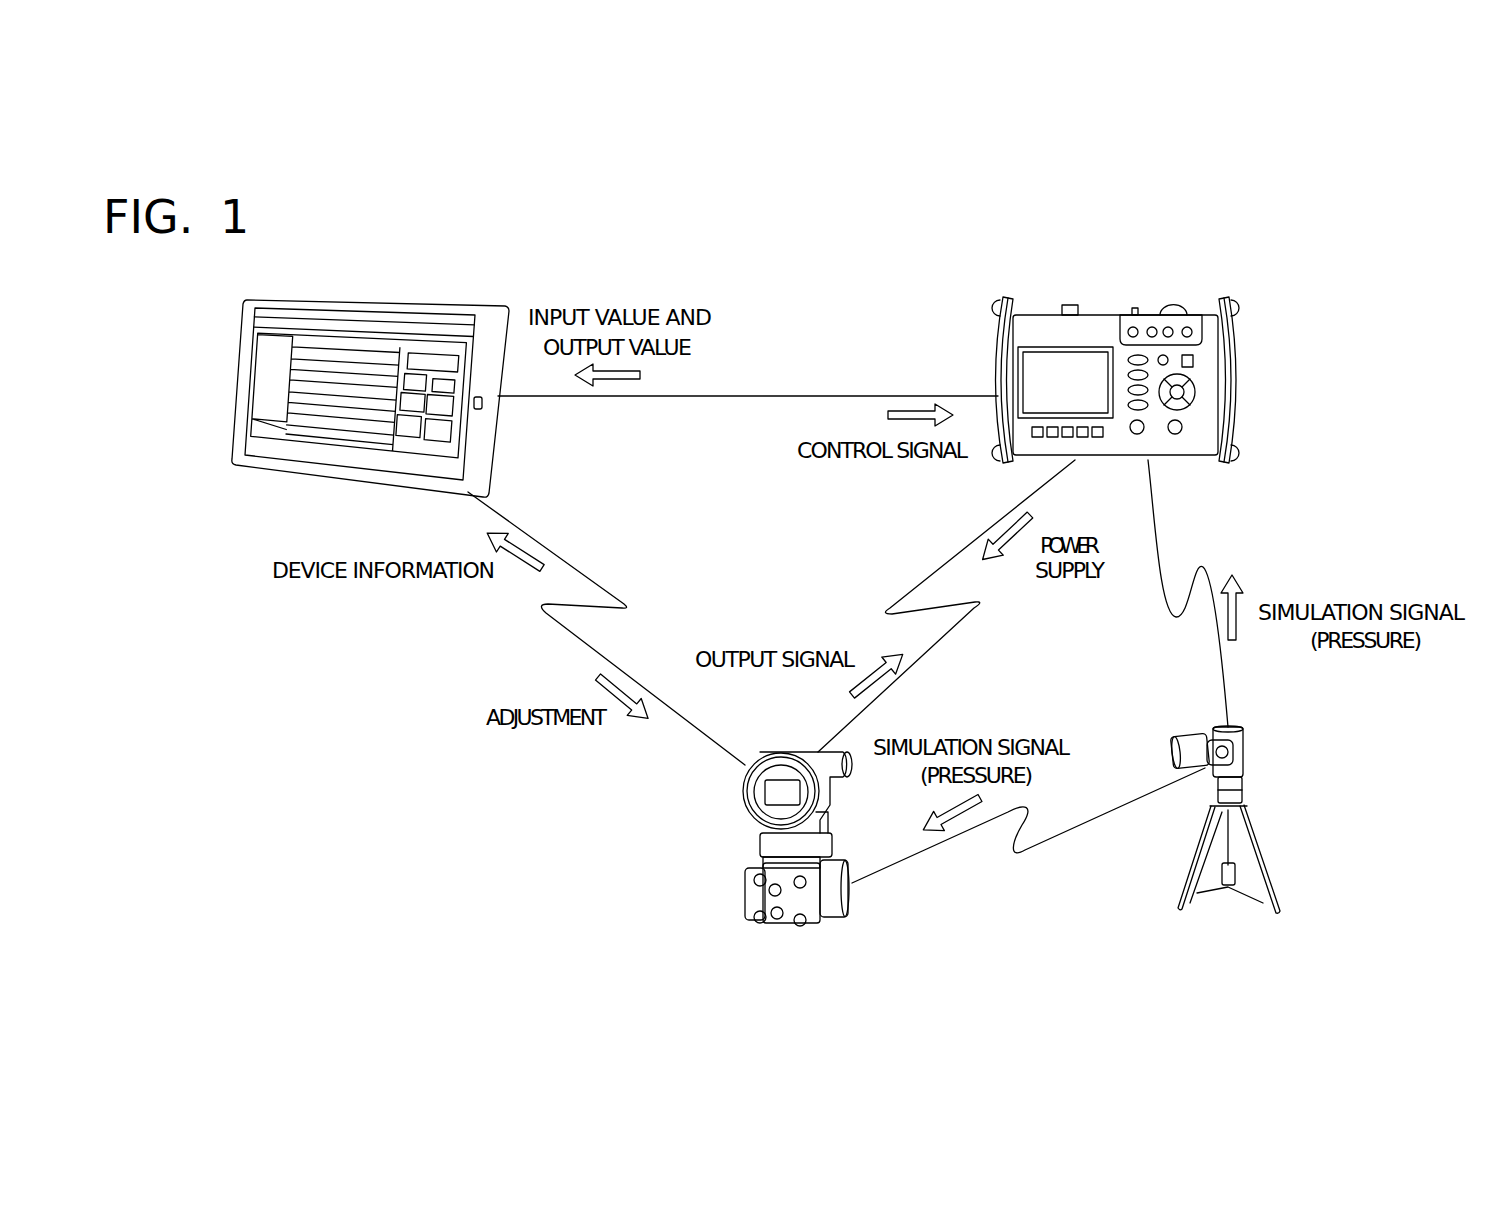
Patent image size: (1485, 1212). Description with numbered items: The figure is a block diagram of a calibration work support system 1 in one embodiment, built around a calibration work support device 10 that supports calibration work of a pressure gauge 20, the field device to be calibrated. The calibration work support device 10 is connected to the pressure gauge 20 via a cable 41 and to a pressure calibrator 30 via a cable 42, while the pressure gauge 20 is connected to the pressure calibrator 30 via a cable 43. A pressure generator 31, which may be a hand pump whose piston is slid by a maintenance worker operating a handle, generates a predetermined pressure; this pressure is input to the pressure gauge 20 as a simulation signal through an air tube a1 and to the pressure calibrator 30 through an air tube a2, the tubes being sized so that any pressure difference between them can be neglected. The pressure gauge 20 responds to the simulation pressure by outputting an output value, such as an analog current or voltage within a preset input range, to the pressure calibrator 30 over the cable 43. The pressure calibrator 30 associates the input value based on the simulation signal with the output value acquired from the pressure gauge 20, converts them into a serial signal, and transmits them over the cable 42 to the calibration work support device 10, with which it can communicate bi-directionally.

The calibration work support system 1 is at (785, 261).
The calibration work support device 10 is at (385, 300).
The pressure gauge 20 is at (758, 843).
The pressure calibrator 30 is at (1097, 315).
The pressure generator 31 is at (1243, 768).
The cable 41 is at (562, 558).
The cable 42 is at (845, 396).
The cable 43 is at (958, 545).
The air tube a1 is at (1125, 805).
The air tube a2 is at (1218, 660).